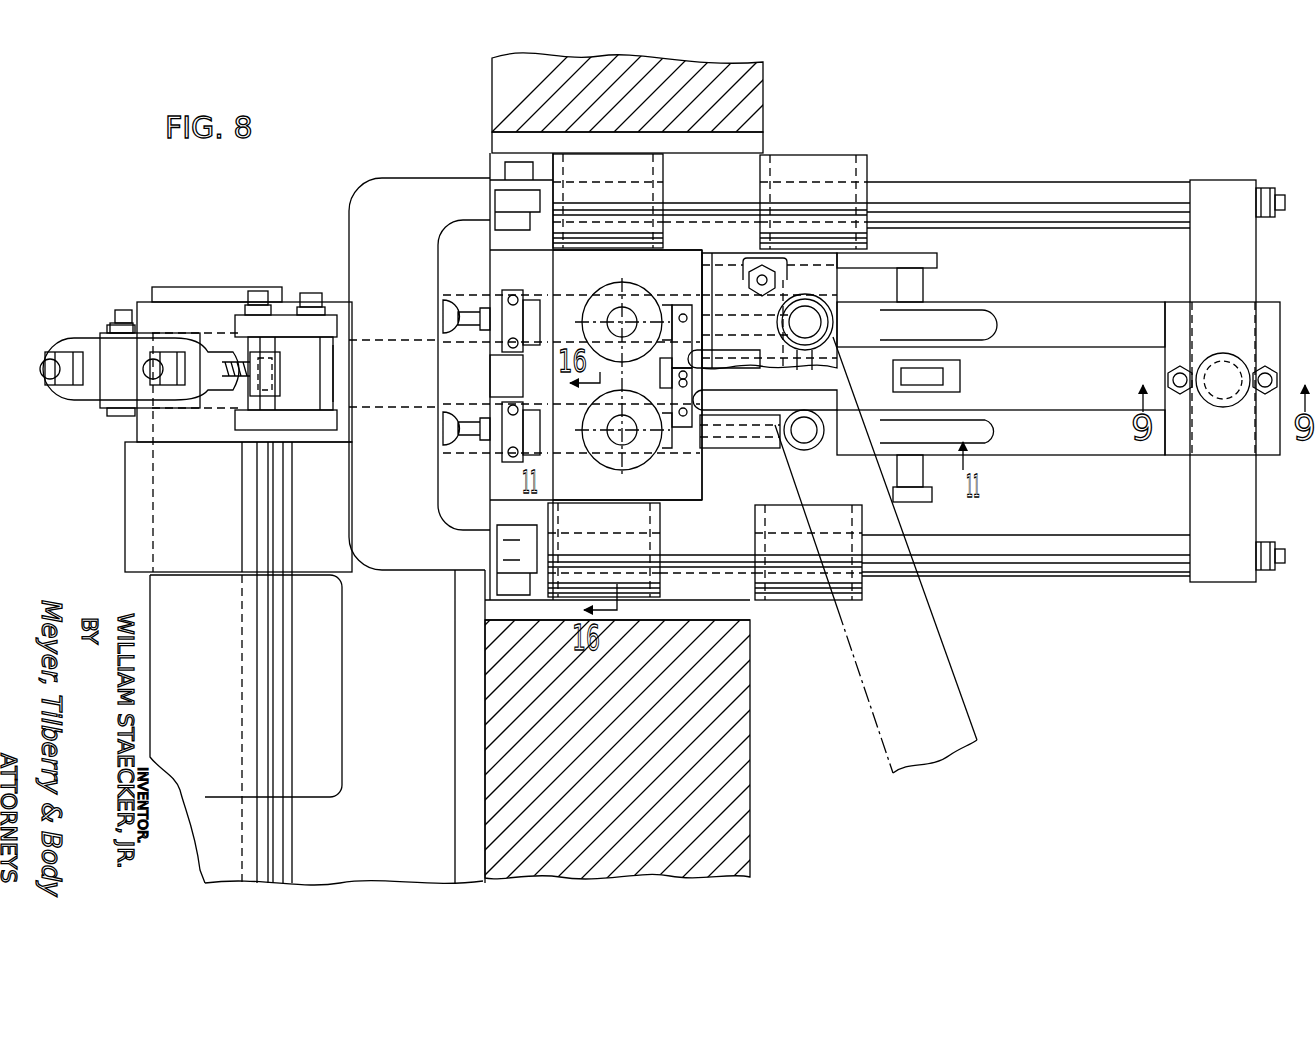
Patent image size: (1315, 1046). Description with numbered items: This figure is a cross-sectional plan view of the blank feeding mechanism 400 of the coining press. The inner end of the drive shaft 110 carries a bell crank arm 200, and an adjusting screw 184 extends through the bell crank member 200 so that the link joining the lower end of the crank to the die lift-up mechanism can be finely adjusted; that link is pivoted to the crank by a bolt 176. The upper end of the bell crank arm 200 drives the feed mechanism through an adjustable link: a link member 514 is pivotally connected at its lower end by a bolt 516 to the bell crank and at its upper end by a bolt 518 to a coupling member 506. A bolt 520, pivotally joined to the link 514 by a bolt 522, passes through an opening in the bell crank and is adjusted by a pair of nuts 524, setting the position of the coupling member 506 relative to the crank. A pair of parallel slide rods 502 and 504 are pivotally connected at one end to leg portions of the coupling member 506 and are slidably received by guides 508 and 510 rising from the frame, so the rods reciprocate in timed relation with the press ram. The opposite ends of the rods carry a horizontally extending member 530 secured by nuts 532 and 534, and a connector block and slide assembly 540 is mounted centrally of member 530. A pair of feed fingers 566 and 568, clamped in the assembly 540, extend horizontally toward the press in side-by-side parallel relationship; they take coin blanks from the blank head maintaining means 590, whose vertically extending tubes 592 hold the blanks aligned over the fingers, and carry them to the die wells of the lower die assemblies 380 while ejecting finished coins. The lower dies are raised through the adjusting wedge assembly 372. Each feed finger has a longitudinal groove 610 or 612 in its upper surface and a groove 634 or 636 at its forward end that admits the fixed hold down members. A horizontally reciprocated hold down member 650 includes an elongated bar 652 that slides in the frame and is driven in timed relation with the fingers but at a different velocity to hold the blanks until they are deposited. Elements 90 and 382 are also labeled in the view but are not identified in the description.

The arm 90 is at (62, 402).
The drive shaft 110 is at (266, 652).
The bolt 176 is at (122, 310).
The adjusting screw 184 is at (52, 358).
The bell crank arm 200 is at (100, 404).
The adjusting wedge assembly 372 is at (508, 292).
The lower die assembly 380 is at (624, 280).
The bracket 382 is at (548, 380).
The blank feeding mechanism 400 is at (1020, 598).
The slide rod 502 is at (1092, 578).
The slide rod 504 is at (1038, 228).
The coupling member 506 is at (395, 572).
The guide 508 is at (628, 600).
The guide 510 is at (622, 152).
The link member 514 is at (337, 430).
The bolt 516 is at (258, 290).
The bolt 518 is at (311, 293).
The bolt 520 is at (238, 380).
The bolt 522 is at (610, 318).
The nuts 524 is at (165, 388).
The horizontally extending member 530 is at (1258, 497).
The nut 532 is at (1260, 575).
The nut 534 is at (1266, 218).
The connector block and slide assembly 540 is at (1175, 460).
The feed finger 566 is at (1032, 457).
The feed finger 568 is at (1058, 348).
The blank head maintaining means 590 is at (875, 296).
The feed tube 592 is at (834, 322).
The longitudinal groove 610 is at (985, 425).
The longitudinal groove 612 is at (962, 340).
The groove 634 is at (672, 432).
The groove 636 is at (684, 312).
The hold down member 650 is at (657, 378).
The elongated bar 652 is at (740, 406).